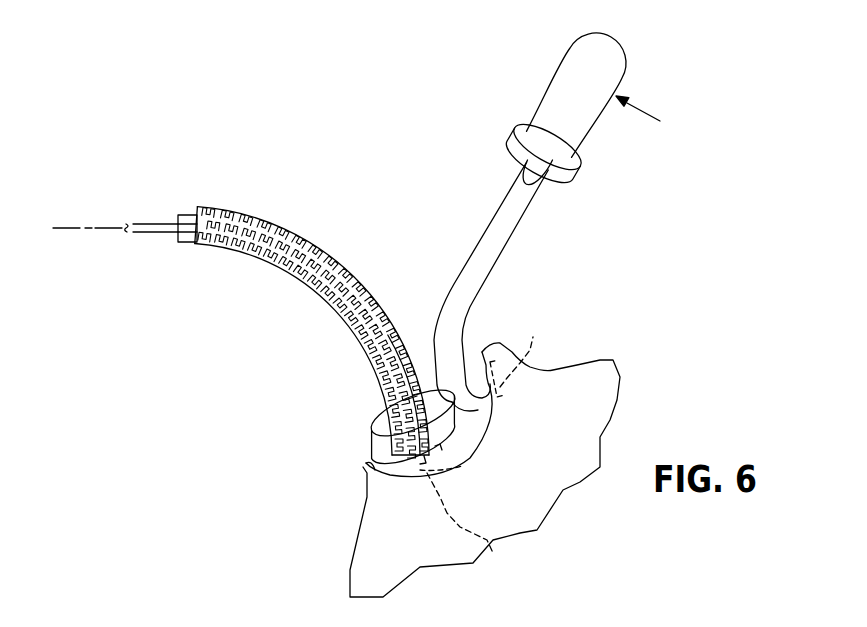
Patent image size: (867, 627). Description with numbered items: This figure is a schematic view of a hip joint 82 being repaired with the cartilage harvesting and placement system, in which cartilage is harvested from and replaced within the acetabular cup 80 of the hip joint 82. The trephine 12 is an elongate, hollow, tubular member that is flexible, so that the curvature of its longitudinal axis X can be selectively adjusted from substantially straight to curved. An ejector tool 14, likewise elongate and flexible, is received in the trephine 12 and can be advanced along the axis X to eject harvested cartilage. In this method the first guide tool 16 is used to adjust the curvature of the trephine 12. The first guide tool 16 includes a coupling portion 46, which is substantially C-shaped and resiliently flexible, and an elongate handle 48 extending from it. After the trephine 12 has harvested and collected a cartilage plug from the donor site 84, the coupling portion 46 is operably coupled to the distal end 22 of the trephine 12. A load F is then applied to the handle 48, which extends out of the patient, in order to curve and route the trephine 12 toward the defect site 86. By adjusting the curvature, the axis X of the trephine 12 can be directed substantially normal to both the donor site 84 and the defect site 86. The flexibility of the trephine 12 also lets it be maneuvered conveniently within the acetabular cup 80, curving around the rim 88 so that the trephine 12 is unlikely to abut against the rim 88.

The trephine 12 is at (327, 250).
The ejector tool 14 is at (150, 234).
The first guide tool 16 is at (517, 222).
The distal end 22 is at (418, 338).
The coupling portion 46 is at (388, 430).
The handle 48 is at (563, 88).
The acetabular cup 80 is at (370, 464).
The hip joint 82 is at (348, 437).
The donor site 84 is at (533, 337).
The defect site 86 is at (493, 553).
The rim 88 is at (363, 470).
The load F is at (648, 117).
The longitudinal axis X is at (80, 229).